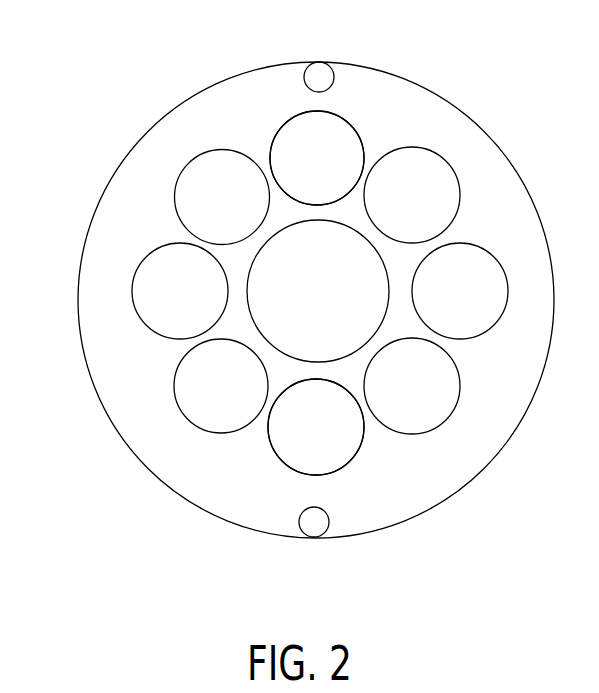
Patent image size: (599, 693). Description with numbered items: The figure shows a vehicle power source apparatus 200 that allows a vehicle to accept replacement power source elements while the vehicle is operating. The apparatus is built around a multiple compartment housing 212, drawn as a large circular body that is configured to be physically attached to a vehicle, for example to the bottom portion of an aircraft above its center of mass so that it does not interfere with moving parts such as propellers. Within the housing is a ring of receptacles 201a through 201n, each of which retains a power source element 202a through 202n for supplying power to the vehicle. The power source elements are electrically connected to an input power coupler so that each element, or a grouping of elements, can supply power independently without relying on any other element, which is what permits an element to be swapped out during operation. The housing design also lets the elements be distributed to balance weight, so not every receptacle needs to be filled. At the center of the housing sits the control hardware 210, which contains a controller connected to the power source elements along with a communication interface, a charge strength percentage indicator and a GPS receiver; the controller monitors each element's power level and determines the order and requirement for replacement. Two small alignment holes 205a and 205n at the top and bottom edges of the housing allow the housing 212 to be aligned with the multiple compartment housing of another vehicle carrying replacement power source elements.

The vehicle power source apparatus 200 is at (293, 304).
The multiple compartment housing 212 is at (118, 170).
The control hardware 210 is at (358, 277).
The receptacle 201a is at (348, 120).
The power source element 202a is at (295, 143).
The receptacle 201n is at (357, 452).
The power source element 202n is at (297, 450).
The alignment hole 205a is at (318, 73).
The alignment hole 205n is at (313, 536).